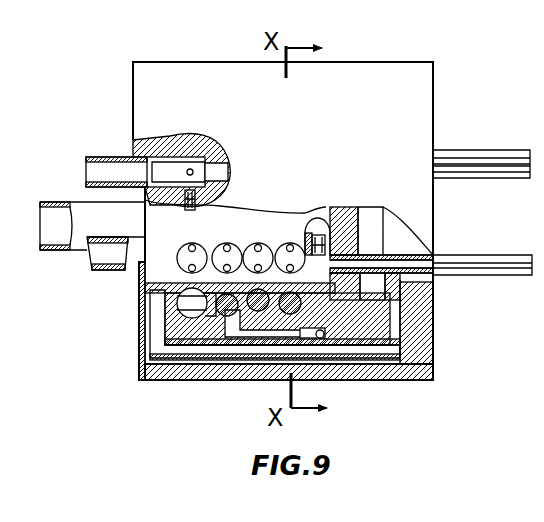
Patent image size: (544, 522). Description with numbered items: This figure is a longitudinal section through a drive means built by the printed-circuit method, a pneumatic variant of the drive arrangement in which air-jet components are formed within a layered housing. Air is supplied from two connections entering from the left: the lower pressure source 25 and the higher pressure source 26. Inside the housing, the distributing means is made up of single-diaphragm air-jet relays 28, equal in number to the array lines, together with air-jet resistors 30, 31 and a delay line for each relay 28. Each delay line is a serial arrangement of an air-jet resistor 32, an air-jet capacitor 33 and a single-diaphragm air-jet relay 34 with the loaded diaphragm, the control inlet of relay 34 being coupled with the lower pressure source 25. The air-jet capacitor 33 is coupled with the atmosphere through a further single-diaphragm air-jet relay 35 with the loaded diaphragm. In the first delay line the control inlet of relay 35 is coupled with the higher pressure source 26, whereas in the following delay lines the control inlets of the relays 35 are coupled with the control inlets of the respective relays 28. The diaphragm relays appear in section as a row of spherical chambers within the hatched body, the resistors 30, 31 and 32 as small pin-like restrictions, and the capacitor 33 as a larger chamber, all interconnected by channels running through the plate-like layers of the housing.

The lower pressure source 25 is at (72, 253).
The higher pressure source 26 is at (70, 173).
The single-diaphragm air-jet relay 28 is at (290, 246).
The air-jet resistor 30 is at (342, 216).
The air-jet resistor 31 is at (305, 318).
The air-jet resistor 32 is at (181, 210).
The air-jet capacitor 33 is at (177, 318).
The single-diaphragm air-jet relay with the loaded diaphragm 34 is at (238, 251).
The single-diaphragm air-jet relay with the loaded diaphragm 35 is at (216, 304).